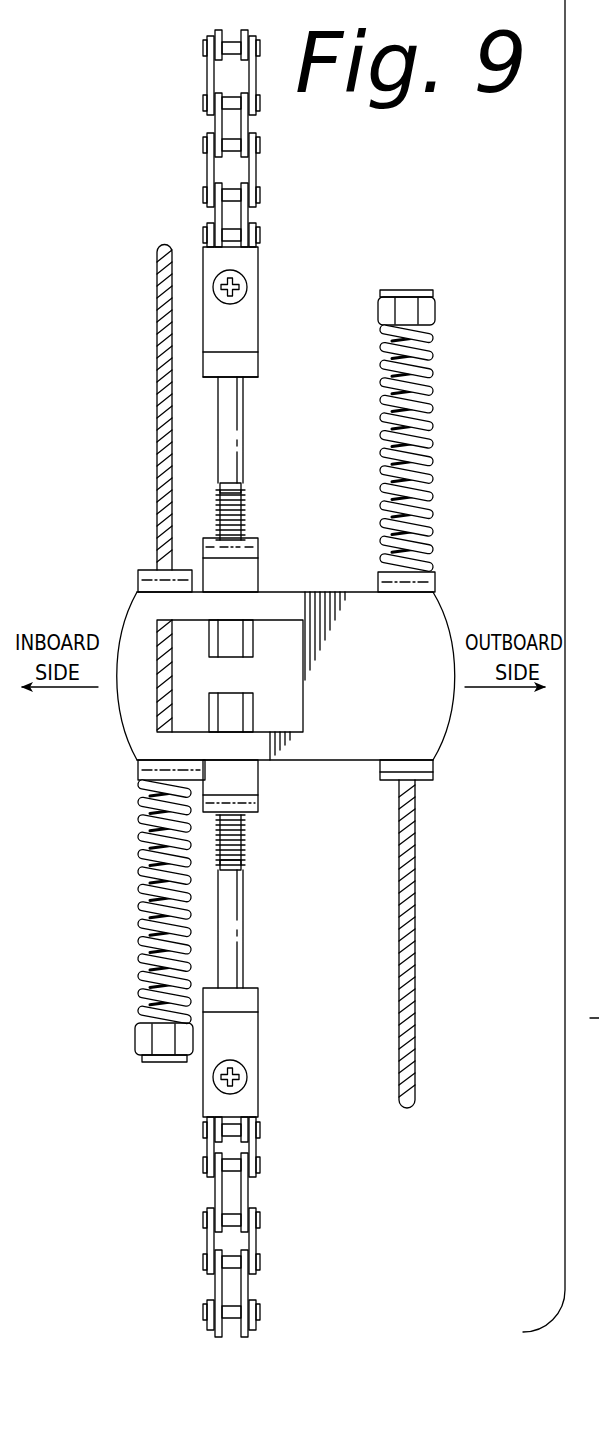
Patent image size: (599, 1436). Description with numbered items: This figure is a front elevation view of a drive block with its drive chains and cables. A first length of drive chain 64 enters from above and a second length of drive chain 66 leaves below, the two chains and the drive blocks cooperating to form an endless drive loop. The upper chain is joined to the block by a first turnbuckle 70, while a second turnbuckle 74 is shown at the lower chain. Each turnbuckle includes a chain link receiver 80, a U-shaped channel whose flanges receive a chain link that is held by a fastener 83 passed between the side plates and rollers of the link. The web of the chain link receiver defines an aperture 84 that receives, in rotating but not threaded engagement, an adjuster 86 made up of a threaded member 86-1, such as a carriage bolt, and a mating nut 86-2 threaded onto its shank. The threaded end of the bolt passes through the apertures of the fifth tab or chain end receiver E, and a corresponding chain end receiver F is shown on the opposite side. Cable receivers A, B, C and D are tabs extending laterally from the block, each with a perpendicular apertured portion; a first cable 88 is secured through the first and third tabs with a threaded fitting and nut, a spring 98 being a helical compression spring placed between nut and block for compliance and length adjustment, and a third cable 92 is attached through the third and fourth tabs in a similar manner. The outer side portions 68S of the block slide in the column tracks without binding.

The first length of drive chain 64 is at (260, 147).
The second length of drive chain 66 is at (260, 1168).
The first turnbuckle 70 is at (276, 343).
The second turnbuckle 74 is at (272, 1057).
The chain link receiver 80 is at (258, 327).
The fastener 83 is at (247, 292).
The aperture 84 is at (195, 378).
The adjuster 86 is at (277, 457).
The threaded member 86-1 is at (257, 390).
The mating nut 86-2 is at (261, 669).
The first cable 88 is at (158, 517).
The third cable 92 is at (415, 950).
The spring 98 is at (142, 967).
The outer side portions 68S is at (123, 736).
The first tab or cable receiver A is at (117, 590).
The second tab or cable receiver B is at (464, 571).
The third tab or cable receiver C is at (117, 782).
The fourth tab or cable receiver D is at (457, 780).
The fifth tab or chain end receiver E is at (278, 542).
The lower rod block F is at (284, 821).